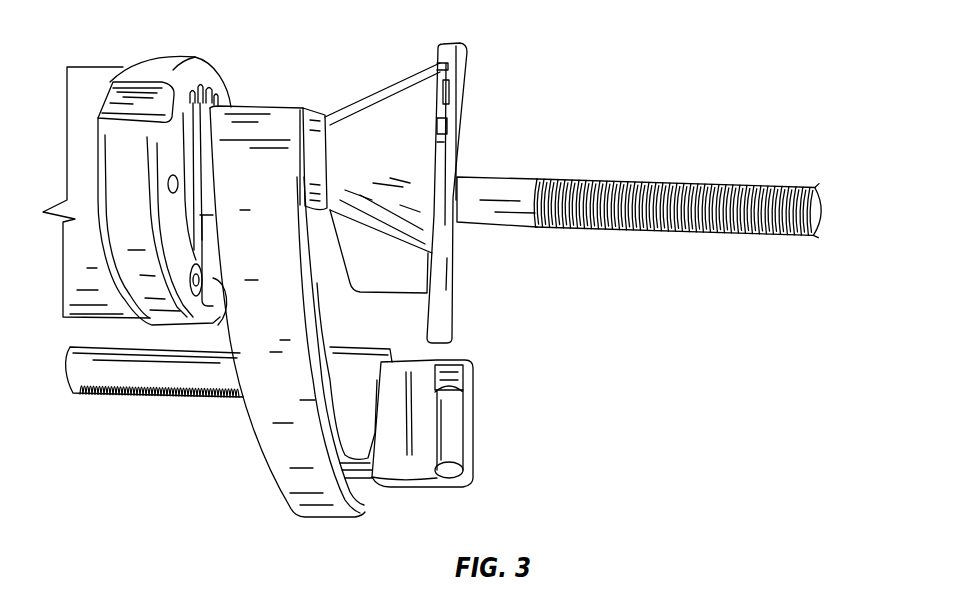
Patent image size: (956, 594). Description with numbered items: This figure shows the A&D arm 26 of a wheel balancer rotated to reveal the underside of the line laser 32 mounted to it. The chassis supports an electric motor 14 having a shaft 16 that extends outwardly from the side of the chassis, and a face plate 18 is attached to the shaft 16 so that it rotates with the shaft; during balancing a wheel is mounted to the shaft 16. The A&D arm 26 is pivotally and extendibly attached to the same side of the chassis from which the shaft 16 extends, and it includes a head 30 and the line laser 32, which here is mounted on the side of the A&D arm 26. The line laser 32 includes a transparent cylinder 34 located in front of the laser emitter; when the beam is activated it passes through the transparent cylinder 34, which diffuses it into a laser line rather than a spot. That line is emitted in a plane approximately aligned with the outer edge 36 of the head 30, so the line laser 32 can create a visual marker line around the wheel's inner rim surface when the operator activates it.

The electric motor 14 is at (155, 72).
The shaft 16 is at (630, 182).
The face plate 18 is at (437, 319).
The A&D arm 26 is at (297, 457).
The head 30 is at (384, 130).
The line laser 32 is at (473, 430).
The transparent cylinder 34 is at (448, 374).
The outer edge 36 is at (447, 95).